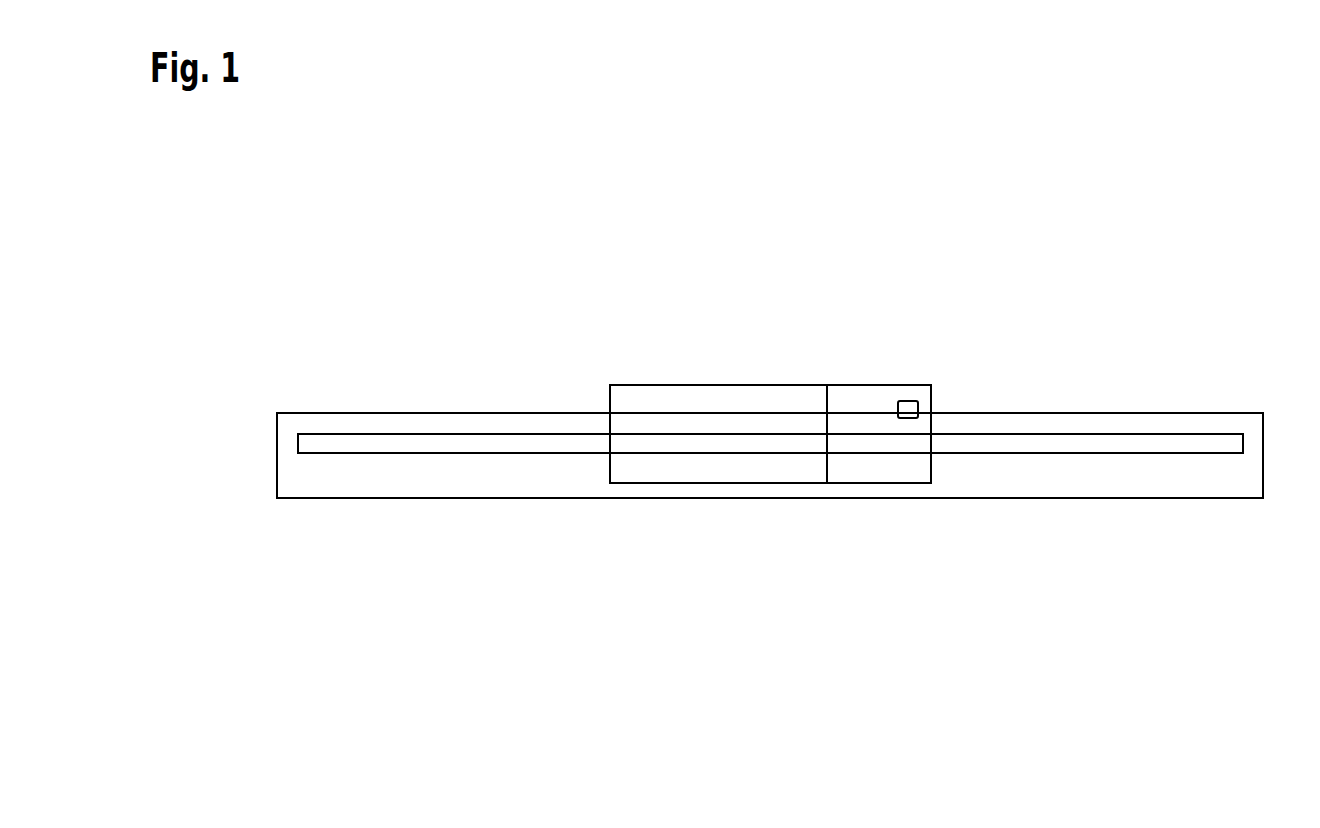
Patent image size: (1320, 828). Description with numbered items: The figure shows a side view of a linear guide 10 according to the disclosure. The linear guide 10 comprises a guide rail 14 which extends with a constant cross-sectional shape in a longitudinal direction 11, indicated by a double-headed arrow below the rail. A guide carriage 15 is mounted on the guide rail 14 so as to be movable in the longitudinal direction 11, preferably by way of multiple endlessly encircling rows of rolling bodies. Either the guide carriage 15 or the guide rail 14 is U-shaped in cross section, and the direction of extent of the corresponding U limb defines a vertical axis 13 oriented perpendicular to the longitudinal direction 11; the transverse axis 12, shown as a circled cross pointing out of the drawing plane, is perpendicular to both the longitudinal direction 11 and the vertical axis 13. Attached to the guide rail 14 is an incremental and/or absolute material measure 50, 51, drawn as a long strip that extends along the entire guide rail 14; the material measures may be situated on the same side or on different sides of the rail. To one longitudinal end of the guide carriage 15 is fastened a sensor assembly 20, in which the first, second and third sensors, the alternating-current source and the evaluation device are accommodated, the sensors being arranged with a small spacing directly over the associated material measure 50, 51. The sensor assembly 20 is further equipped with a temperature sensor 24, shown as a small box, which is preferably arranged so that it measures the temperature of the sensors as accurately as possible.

The linear guide 10 is at (1052, 222).
The longitudinal direction 11 is at (845, 575).
The transverse axis 12 is at (767, 292).
The vertical axis 13 is at (772, 195).
The guide rail 14 is at (1142, 425).
The guide carriage 15 is at (653, 392).
The sensor assembly 20 is at (865, 392).
The temperature sensor 24 is at (910, 404).
The incremental material measure 50 is at (1032, 442).
The absolute material measure 51 is at (770, 443).